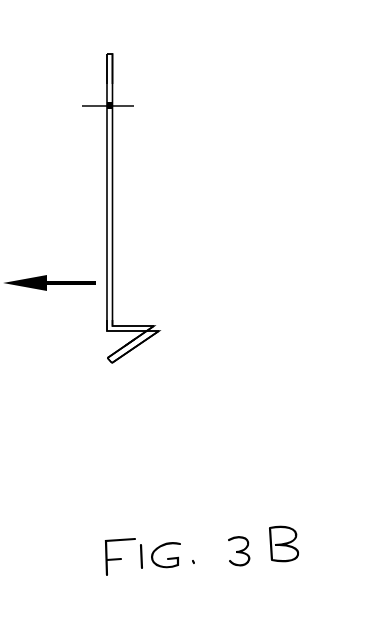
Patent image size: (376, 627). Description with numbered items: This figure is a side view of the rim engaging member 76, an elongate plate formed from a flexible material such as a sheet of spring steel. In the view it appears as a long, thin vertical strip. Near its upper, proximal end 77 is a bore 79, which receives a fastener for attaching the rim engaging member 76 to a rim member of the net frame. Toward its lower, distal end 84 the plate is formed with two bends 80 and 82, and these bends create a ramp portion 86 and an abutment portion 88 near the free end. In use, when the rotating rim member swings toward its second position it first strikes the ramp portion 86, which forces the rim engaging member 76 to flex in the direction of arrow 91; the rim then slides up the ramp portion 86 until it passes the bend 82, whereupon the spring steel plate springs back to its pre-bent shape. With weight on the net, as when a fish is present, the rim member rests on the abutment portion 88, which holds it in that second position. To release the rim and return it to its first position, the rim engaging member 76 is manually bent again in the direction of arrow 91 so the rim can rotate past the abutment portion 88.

The rim engaging member 76 is at (113, 148).
The proximal end 77 is at (113, 86).
The bore 79 is at (105, 108).
The bend 80 is at (103, 332).
The bend 82 is at (158, 329).
The distal end 84 is at (116, 359).
The ramp portion 86 is at (136, 339).
The abutment portion 88 is at (130, 325).
The arrow 91 is at (58, 278).